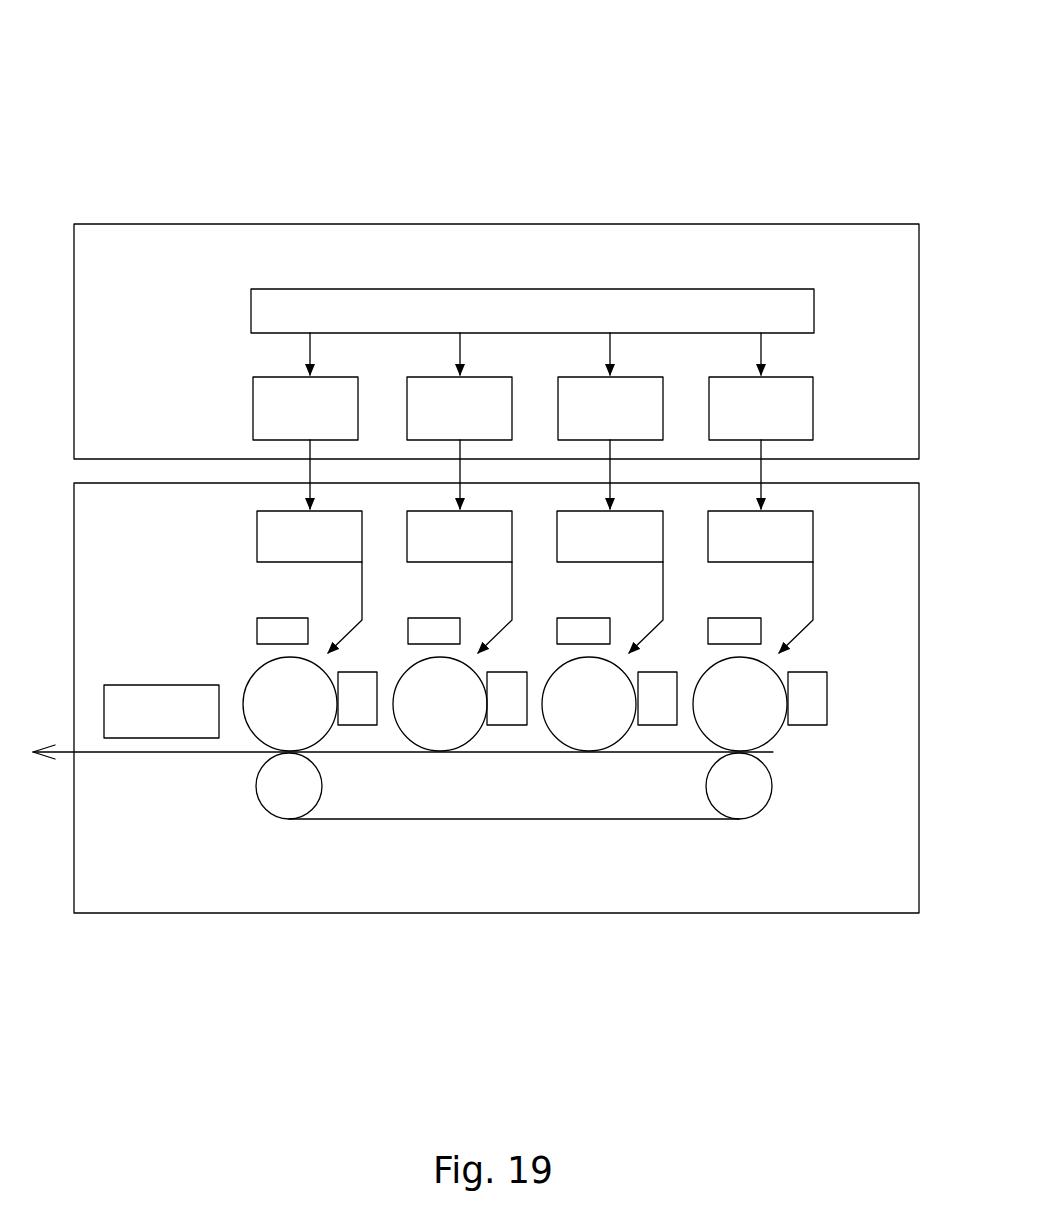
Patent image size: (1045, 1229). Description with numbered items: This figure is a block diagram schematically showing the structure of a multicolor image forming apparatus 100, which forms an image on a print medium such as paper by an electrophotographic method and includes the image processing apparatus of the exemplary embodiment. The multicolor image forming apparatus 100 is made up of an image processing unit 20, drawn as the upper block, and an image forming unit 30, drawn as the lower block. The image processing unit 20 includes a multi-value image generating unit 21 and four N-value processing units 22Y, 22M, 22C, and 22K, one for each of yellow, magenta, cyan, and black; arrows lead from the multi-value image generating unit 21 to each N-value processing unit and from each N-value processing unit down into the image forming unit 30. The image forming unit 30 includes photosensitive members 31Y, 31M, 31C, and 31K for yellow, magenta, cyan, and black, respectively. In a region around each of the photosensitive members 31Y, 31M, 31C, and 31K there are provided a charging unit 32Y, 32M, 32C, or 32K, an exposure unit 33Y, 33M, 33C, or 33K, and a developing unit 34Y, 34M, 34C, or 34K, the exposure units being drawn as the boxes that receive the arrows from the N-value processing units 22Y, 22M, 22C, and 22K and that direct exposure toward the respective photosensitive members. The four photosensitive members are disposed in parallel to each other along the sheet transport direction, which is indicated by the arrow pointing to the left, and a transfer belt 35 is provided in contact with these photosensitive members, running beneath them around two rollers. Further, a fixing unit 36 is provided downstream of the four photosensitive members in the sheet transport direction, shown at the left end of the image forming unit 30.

The multicolor image forming apparatus 100 is at (300, 150).
The image processing unit 20 is at (786, 224).
The multi-value image generating unit 21 is at (814, 305).
The N-value processing unit 22K is at (358, 405).
The N-value processing unit 22C is at (512, 405).
The N-value processing unit 22M is at (663, 405).
The N-value processing unit 22Y is at (813, 405).
The image forming unit 30 is at (758, 913).
The photosensitive member 31K is at (322, 742).
The photosensitive member 31C is at (474, 742).
The photosensitive member 31M is at (622, 740).
The photosensitive member 31Y is at (770, 748).
The charging unit 32K is at (270, 618).
The charging unit 32C is at (421, 618).
The charging unit 32M is at (570, 618).
The charging unit 32Y is at (721, 618).
The exposure unit 33K is at (322, 562).
The exposure unit 33C is at (472, 562).
The exposure unit 33M is at (622, 562).
The exposure unit 33Y is at (772, 562).
The developing unit 34K is at (360, 672).
The developing unit 34C is at (509, 672).
The developing unit 34M is at (661, 672).
The developing unit 34Y is at (829, 672).
The transfer belt 35 is at (695, 819).
The fixing unit 36 is at (162, 685).